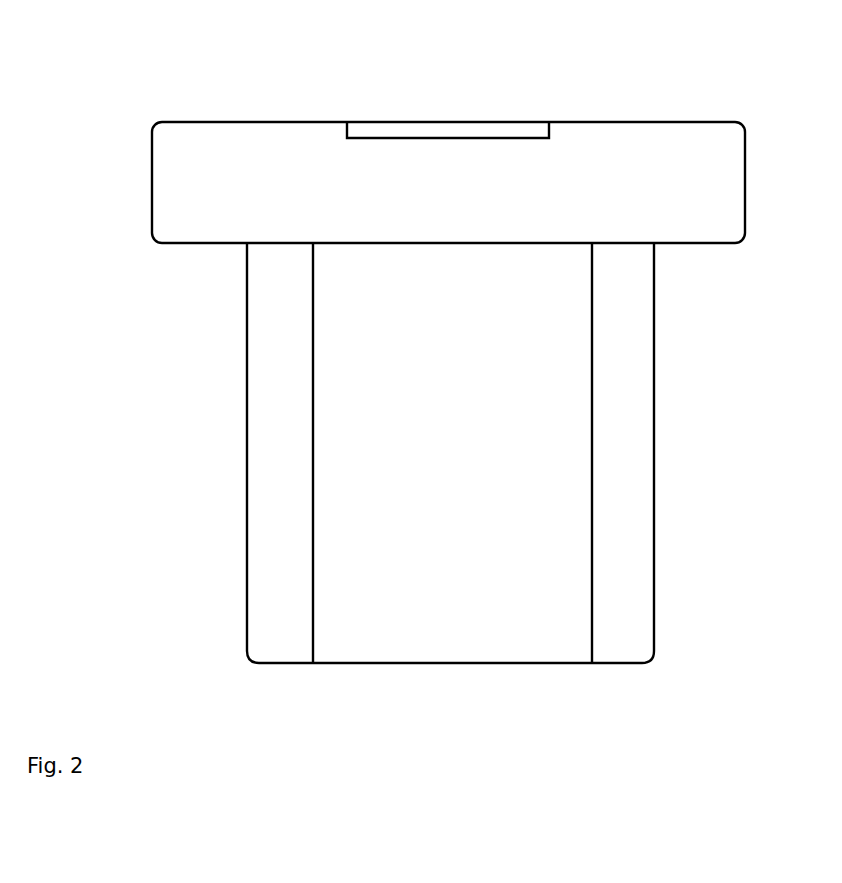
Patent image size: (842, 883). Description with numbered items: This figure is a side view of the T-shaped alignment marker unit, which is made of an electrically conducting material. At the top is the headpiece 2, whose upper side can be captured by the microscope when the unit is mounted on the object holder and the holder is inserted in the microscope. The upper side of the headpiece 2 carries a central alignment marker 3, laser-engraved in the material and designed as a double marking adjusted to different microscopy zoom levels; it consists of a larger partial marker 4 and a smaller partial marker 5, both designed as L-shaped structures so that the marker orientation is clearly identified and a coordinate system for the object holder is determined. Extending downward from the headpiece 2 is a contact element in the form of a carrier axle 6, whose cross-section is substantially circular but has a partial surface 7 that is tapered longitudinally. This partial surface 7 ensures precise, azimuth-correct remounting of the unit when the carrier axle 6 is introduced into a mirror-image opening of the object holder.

The headpiece 2 is at (156, 189).
The central alignment marker 3 is at (448, 74).
The larger partial marker 4 is at (448, 74).
The smaller partial marker 5 is at (444, 127).
The carrier axle 6 is at (637, 405).
The partial surface 7 is at (338, 518).